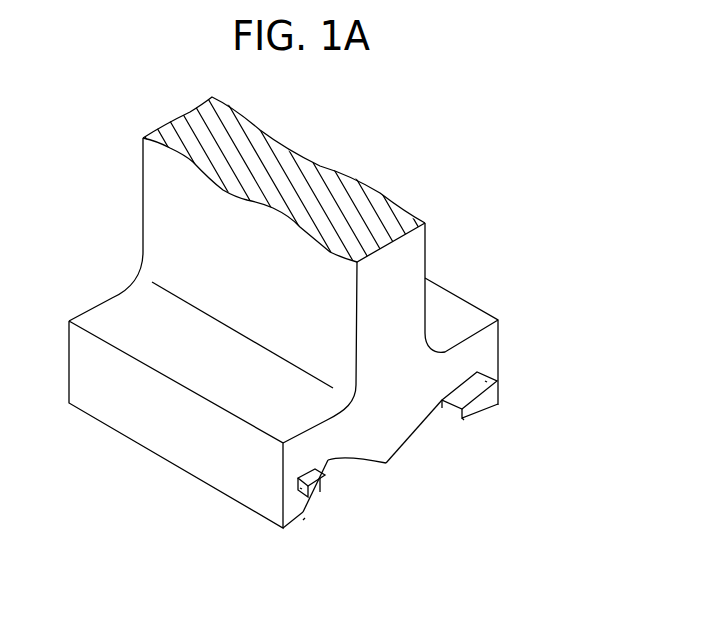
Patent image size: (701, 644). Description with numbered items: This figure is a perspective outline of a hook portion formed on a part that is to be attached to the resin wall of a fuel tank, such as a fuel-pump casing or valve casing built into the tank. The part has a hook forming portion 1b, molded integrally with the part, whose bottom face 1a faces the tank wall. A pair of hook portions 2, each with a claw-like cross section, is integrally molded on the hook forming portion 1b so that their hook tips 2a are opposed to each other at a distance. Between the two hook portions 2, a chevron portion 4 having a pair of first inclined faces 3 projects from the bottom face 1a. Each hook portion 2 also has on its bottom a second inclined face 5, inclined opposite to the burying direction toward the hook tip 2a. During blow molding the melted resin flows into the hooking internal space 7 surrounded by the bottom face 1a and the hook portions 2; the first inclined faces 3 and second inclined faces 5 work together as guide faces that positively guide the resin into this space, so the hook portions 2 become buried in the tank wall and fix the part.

The bottom face 1a is at (327, 465).
The hook forming portion 1b is at (168, 203).
The hook portion 2 is at (484, 403).
The hook tip 2a is at (445, 411).
The first inclined face 3 is at (370, 463).
The chevron portion 4 is at (395, 430).
The second inclined face 5 is at (473, 418).
The hooking internal space 7 is at (480, 383).